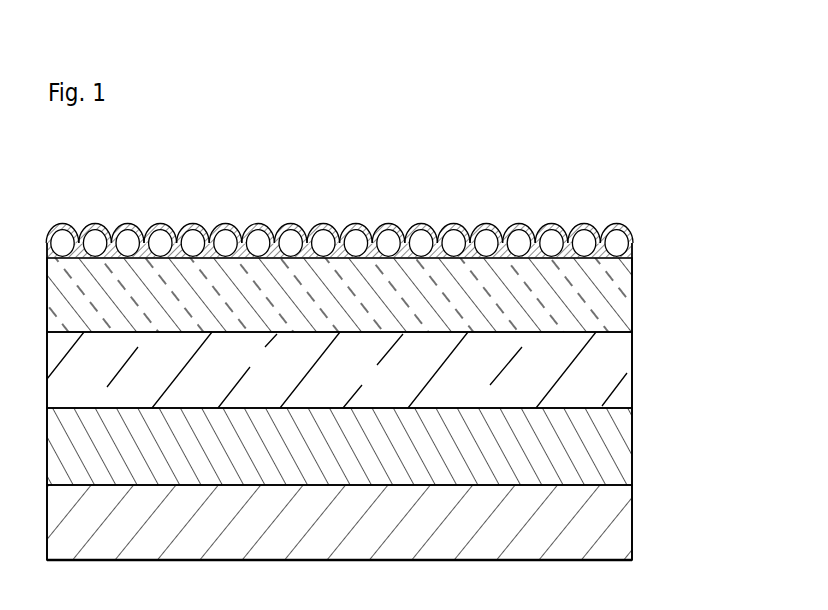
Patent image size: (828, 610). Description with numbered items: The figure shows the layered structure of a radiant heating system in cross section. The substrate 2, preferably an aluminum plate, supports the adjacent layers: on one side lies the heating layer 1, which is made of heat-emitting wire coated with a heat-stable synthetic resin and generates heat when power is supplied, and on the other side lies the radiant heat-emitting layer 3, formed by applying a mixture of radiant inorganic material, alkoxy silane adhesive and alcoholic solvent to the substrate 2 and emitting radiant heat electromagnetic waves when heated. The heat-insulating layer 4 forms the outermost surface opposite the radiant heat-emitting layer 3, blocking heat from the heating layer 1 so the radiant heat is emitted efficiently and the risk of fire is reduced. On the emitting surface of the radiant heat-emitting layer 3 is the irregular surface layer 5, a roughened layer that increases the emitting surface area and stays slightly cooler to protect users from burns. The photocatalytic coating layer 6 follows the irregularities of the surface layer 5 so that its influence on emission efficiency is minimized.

The heating layer 1 is at (610, 449).
The substrate 2 is at (611, 372).
The radiant heat-emitting layer 3 is at (612, 299).
The heat-insulating layer 4 is at (610, 521).
The irregular surface layer 5 is at (617, 237).
The photocatalytic coating layer 6 is at (566, 231).